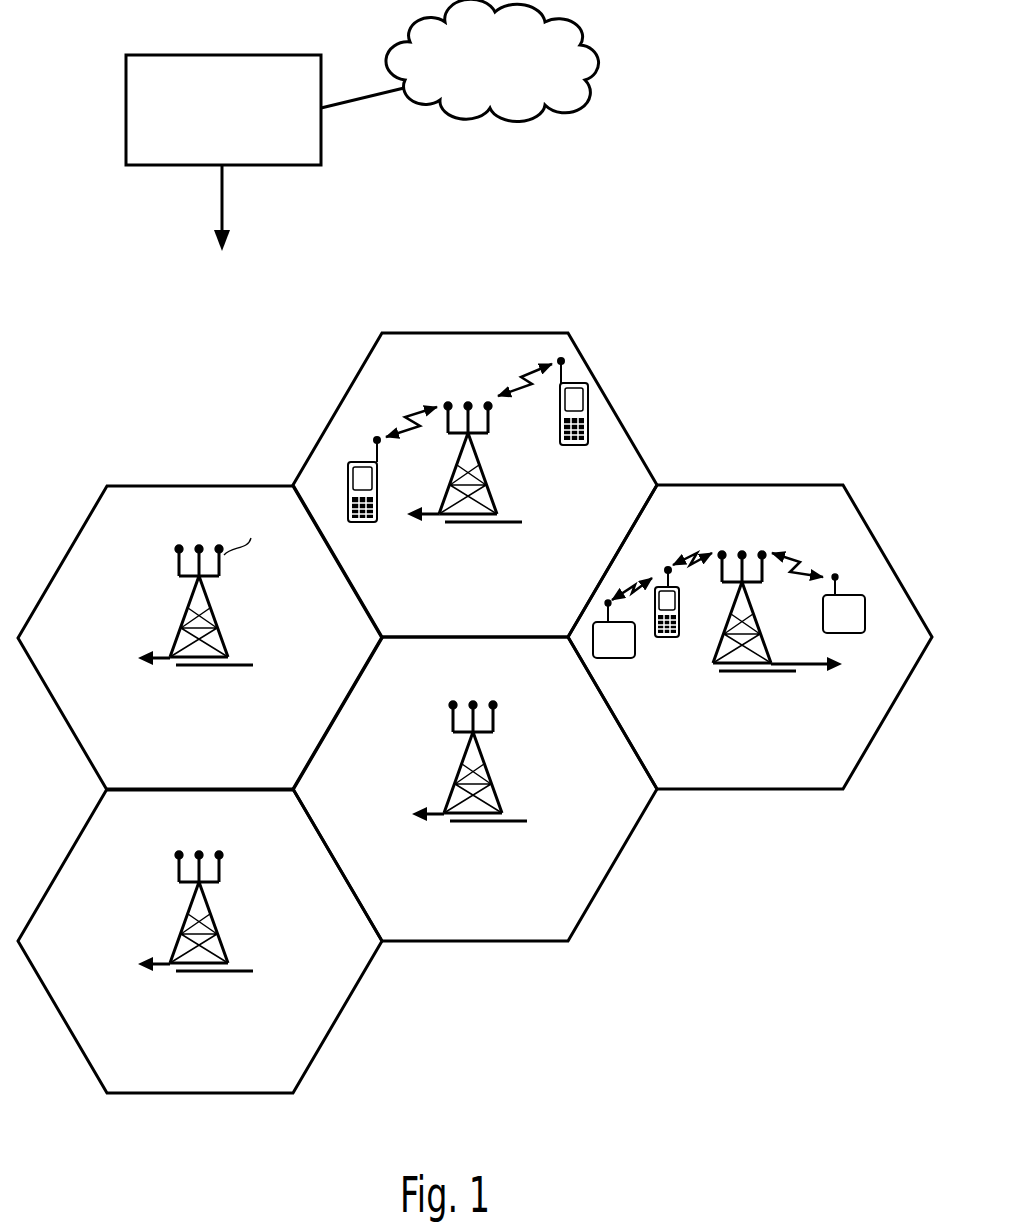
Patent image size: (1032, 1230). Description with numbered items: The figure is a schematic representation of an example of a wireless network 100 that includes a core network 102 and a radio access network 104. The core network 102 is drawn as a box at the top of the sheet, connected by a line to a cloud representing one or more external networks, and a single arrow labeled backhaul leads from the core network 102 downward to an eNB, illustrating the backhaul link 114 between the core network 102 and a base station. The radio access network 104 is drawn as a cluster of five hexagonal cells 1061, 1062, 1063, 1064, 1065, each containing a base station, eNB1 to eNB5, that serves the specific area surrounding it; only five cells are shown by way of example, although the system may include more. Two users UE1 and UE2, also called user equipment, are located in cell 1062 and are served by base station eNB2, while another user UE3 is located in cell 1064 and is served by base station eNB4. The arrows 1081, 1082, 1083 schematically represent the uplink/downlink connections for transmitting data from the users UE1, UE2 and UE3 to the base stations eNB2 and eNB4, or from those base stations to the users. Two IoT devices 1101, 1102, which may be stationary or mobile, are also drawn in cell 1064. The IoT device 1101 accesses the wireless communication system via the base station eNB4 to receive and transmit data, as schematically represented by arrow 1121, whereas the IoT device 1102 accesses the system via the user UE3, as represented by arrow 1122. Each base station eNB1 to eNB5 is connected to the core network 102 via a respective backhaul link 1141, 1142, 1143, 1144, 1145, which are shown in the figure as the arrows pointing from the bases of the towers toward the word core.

The wireless network 100 is at (479, 546).
The core network 102 is at (126, 113).
The radio access network 104 is at (628, 990).
The cell 1061 is at (200, 638).
The cell 1062 is at (475, 485).
The cell 1063 is at (200, 941).
The cell 1064 is at (754, 634).
The cell 1065 is at (475, 789).
The arrow 1081 is at (404, 424).
The arrow 1082 is at (528, 392).
The arrow 1083 is at (688, 565).
The IoT device 1101 is at (866, 614).
The IoT device 1102 is at (615, 658).
The arrow 1121 is at (787, 566).
The arrow 1122 is at (621, 590).
The backhaul link 114 is at (220, 200).
The backhaul link 1141 is at (158, 663).
The backhaul link 1142 is at (428, 519).
The backhaul link 1143 is at (158, 969).
The backhaul link 1144 is at (805, 668).
The backhaul link 1145 is at (433, 819).